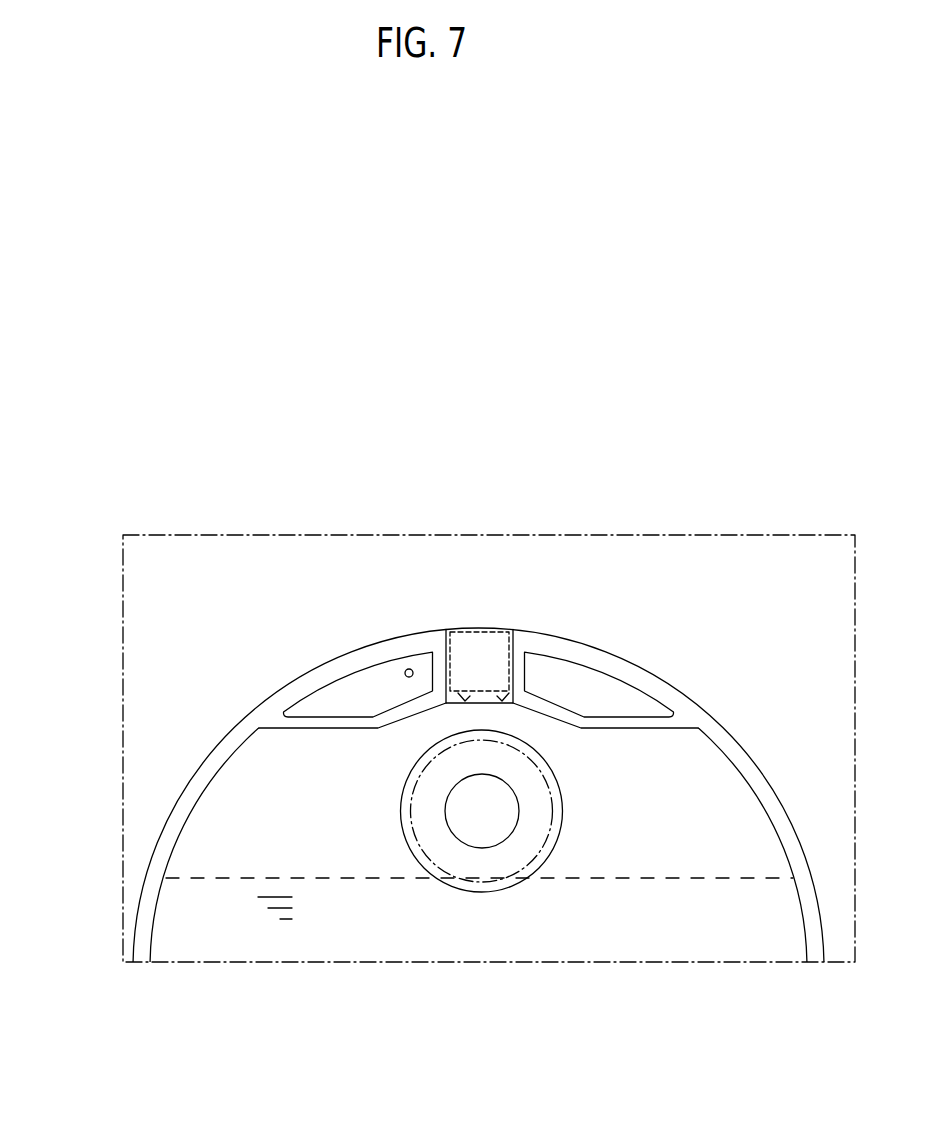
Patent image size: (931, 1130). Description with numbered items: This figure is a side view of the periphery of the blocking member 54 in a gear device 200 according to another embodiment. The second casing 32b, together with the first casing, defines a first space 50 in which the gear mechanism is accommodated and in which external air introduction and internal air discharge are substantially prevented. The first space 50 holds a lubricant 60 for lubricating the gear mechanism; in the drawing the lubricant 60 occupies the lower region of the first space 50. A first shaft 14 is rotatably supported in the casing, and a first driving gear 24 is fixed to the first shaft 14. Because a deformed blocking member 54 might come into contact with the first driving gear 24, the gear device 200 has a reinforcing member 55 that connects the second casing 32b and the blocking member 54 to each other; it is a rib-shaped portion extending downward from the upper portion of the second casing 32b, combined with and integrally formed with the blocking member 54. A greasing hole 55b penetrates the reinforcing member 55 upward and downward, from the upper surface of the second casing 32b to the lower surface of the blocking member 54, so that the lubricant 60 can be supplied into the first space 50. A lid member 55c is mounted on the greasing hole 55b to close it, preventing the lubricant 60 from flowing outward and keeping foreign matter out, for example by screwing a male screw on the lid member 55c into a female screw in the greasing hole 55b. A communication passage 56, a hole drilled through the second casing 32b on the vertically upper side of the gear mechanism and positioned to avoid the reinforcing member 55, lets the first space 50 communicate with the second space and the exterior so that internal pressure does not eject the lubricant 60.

The gear device 200 is at (278, 523).
The second casing 32b is at (257, 711).
The first space 50 is at (708, 808).
The blocking member 54 is at (565, 713).
The communication passage 56 is at (404, 669).
The reinforcing member 55 is at (440, 670).
The greasing hole 55b is at (478, 707).
The lid member 55c is at (482, 632).
The first driving gear 24 is at (558, 825).
The first shaft 14 is at (482, 837).
The lubricant 60 is at (200, 927).